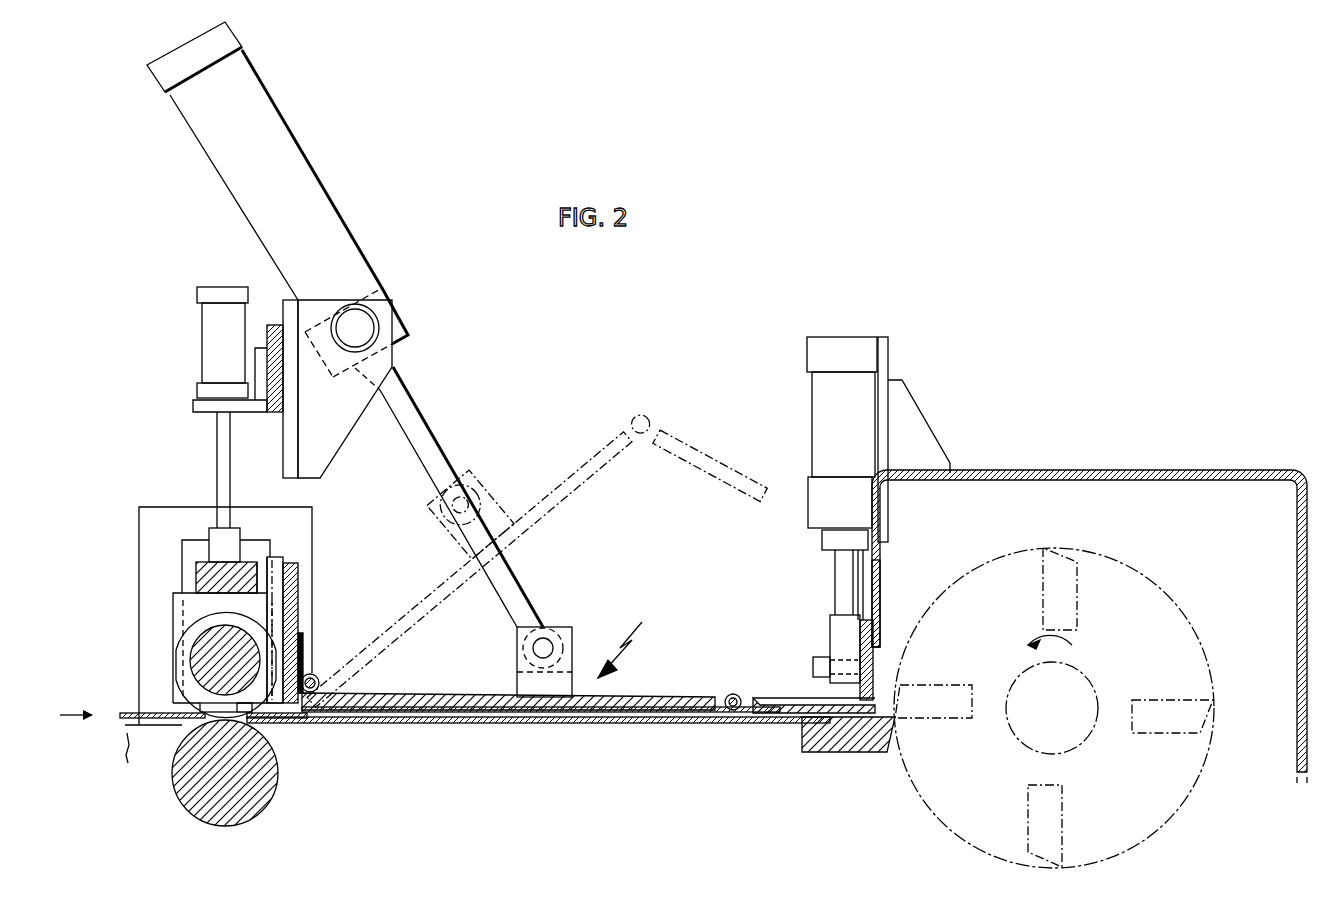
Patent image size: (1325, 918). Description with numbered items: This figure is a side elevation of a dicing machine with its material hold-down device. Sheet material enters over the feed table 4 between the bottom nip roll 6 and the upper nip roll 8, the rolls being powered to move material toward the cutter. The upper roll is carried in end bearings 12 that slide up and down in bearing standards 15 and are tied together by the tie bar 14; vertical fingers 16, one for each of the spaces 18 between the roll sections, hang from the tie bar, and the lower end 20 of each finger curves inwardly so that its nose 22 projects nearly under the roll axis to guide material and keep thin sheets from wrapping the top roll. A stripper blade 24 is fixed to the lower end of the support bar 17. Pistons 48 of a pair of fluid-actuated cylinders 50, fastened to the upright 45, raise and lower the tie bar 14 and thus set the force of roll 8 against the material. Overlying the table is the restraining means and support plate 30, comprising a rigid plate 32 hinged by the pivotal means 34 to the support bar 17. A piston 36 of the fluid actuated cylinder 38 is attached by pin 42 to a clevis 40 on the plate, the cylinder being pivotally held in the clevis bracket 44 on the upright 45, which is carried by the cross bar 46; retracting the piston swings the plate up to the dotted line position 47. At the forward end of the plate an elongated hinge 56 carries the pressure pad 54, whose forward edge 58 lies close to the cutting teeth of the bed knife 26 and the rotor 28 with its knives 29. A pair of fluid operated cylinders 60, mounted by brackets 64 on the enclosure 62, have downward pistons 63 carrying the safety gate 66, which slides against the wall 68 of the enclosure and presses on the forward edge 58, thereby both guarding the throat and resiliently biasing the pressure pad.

The feed table 4 is at (467, 725).
The bottom nip roll 6 is at (178, 796).
The upper nip roll 8 is at (178, 662).
The end bearings 12 is at (173, 605).
The tie bar 14 is at (196, 578).
The bearing standards 15 is at (139, 535).
The vertical fingers 16 is at (277, 575).
The support bar 17 is at (300, 605).
The spaces 18 is at (193, 636).
The lower end of finger 20 is at (252, 705).
The nose of finger 22 is at (207, 703).
The stripper blade 24 is at (275, 705).
The bed knife 26 is at (862, 752).
The rotor 28 is at (1185, 612).
The knives 29 is at (1043, 592).
The restraining means and support plate 30 is at (633, 647).
The rigid plate 32 is at (638, 697).
The pivotal means 34 is at (316, 674).
The piston 36 is at (433, 478).
The fluid actuated cylinder 38 is at (318, 200).
The clevis 40 is at (517, 640).
The pin 42 is at (540, 649).
The clevis bracket 44 is at (330, 435).
The upright 45 is at (290, 452).
The cross bar 46 is at (276, 411).
The dotted line position 47 is at (585, 460).
The pistons 48 is at (217, 458).
The fluid-actuated cylinders 50 is at (208, 340).
The pressure pad 54 is at (800, 698).
The elongated hinge 56 is at (736, 694).
The forward edge of pressure pad 58 is at (885, 706).
The fluid operated cylinders 60 is at (807, 355).
The enclosure 62 is at (1232, 470).
The pistons 63 is at (842, 584).
The brackets 64 is at (900, 409).
The safety gate 66 is at (874, 670).
The wall 68 is at (881, 590).